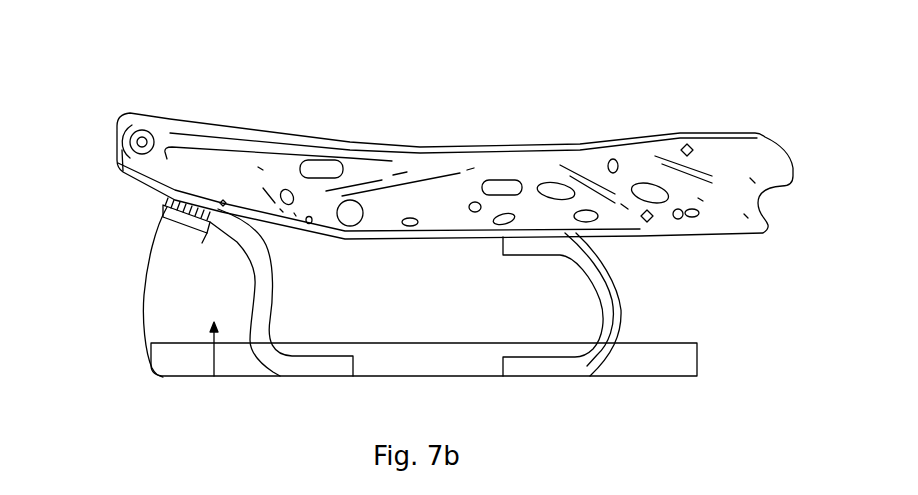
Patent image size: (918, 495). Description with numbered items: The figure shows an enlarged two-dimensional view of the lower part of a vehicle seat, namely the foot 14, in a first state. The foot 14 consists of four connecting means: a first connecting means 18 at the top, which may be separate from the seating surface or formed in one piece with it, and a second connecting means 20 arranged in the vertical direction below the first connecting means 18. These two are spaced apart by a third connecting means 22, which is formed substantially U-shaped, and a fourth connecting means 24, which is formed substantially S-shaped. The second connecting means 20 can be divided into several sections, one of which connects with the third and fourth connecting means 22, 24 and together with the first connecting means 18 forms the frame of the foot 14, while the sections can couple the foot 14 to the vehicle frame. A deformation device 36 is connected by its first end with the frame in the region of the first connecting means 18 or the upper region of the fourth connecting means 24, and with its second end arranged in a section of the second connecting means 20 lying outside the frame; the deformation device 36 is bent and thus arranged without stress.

The foot 14 is at (723, 299).
The first connecting means 18 is at (453, 167).
The second connecting means 20 is at (403, 377).
The third connecting means 22 is at (596, 360).
The fourth connecting means 24 is at (266, 358).
The deformation device 36 is at (138, 310).